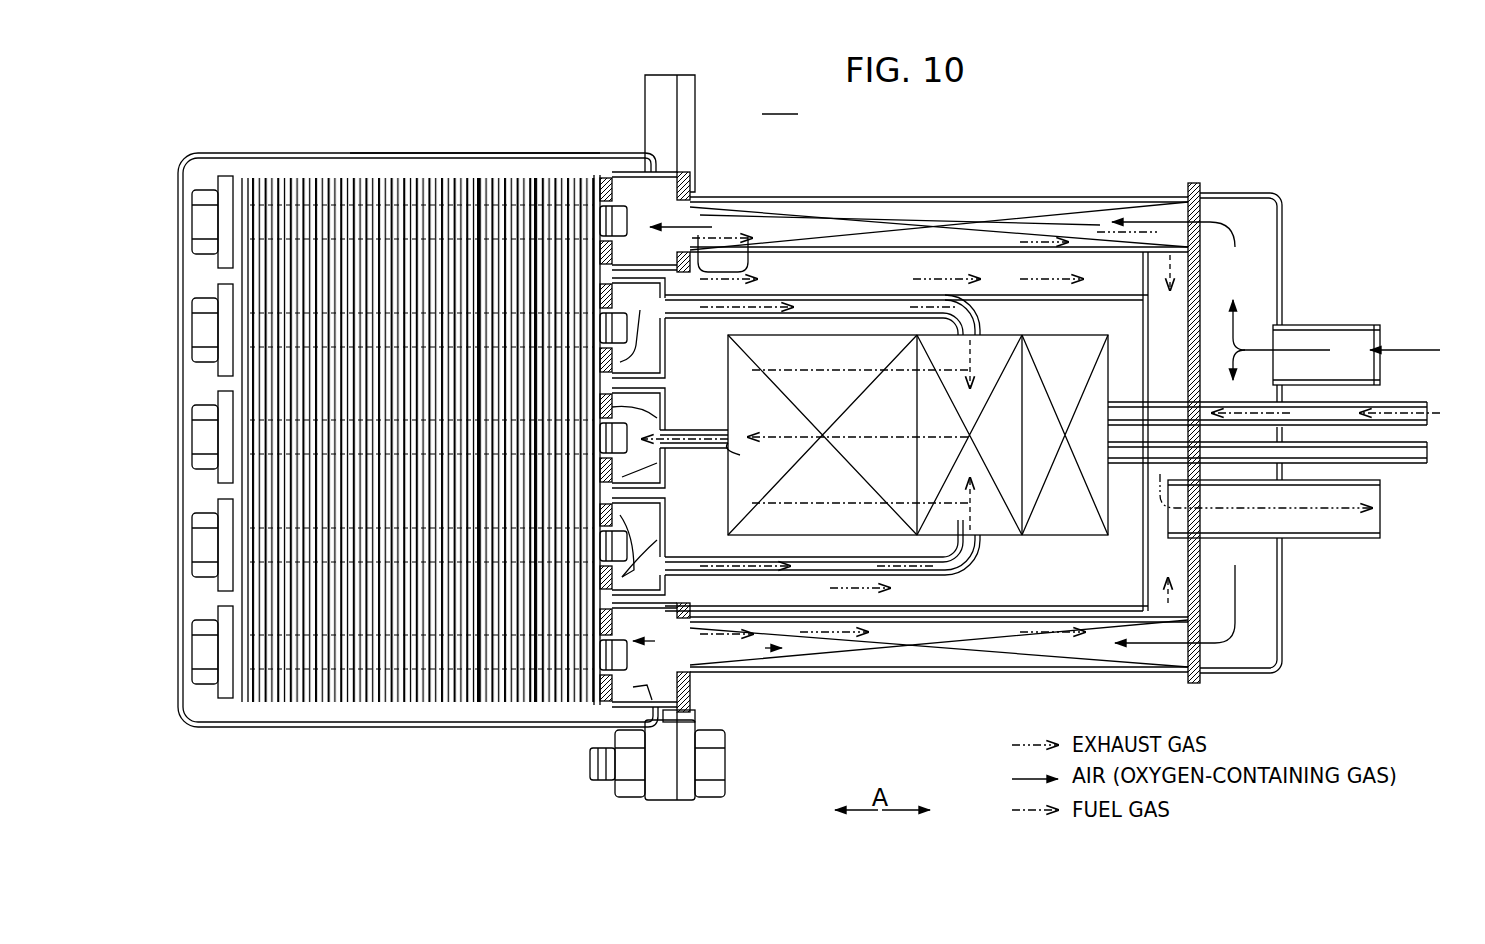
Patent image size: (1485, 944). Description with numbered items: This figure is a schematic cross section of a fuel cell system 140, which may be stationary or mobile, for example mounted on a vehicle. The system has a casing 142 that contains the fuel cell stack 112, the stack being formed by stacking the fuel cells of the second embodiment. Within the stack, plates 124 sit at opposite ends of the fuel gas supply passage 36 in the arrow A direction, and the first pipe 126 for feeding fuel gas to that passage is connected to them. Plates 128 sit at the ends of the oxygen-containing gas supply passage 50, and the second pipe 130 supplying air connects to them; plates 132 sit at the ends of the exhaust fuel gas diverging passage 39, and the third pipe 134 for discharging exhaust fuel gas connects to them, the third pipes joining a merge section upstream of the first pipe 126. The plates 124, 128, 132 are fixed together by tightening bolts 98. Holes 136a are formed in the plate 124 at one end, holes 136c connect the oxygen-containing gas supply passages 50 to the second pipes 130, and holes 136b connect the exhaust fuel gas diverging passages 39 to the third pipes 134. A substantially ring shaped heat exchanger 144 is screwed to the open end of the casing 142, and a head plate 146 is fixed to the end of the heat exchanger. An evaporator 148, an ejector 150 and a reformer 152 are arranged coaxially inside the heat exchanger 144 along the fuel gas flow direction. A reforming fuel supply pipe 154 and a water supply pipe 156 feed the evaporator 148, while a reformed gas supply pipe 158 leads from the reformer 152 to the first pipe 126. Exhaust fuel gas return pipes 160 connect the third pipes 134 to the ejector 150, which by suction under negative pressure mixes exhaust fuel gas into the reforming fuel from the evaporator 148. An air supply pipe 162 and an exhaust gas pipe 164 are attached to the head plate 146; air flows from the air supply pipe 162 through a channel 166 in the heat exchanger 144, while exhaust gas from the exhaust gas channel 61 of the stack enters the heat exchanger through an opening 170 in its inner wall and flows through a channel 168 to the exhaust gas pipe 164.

The fuel gas supply passage 36 is at (478, 200).
The exhaust fuel gas diverging passage 39 is at (535, 200).
The oxygen-containing gas supply passage 50 is at (362, 176).
The exhaust gas channel 61 is at (617, 608).
The tightening bolt 98 is at (205, 225).
The fuel cell stack 112 is at (245, 153).
The plate 124 is at (668, 456).
The first pipe 126 is at (668, 398).
The plate 128 is at (600, 733).
The second pipe 130 is at (677, 170).
The plate 132 is at (665, 505).
The third pipe 134 is at (668, 360).
The hole 136a is at (662, 415).
The hole 136b is at (660, 542).
The hole 136c is at (617, 680).
The fuel cell system 140 is at (780, 101).
The casing 142 is at (430, 153).
The heat exchanger 144 is at (1012, 222).
The head plate 146 is at (1283, 222).
The evaporator 148 is at (1078, 520).
The ejector 150 is at (968, 522).
The reformer 152 is at (815, 340).
The reforming fuel supply pipe 154 is at (1395, 402).
The water supply pipe 156 is at (1408, 463).
The reformed gas supply pipe 158 is at (732, 450).
The exhaust fuel gas return pipe 160 is at (897, 293).
The air supply pipe 162 is at (1350, 325).
The exhaust gas pipe 164 is at (1358, 538).
The channel 166 is at (1172, 240).
The channel 168 is at (1096, 222).
The opening 170 is at (747, 253).